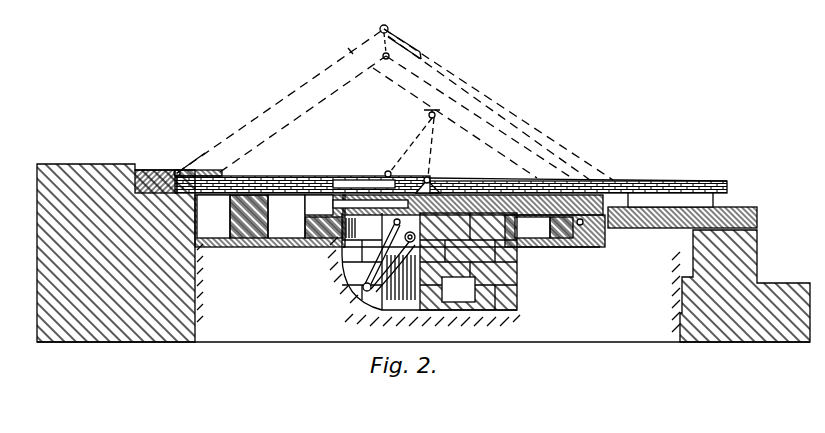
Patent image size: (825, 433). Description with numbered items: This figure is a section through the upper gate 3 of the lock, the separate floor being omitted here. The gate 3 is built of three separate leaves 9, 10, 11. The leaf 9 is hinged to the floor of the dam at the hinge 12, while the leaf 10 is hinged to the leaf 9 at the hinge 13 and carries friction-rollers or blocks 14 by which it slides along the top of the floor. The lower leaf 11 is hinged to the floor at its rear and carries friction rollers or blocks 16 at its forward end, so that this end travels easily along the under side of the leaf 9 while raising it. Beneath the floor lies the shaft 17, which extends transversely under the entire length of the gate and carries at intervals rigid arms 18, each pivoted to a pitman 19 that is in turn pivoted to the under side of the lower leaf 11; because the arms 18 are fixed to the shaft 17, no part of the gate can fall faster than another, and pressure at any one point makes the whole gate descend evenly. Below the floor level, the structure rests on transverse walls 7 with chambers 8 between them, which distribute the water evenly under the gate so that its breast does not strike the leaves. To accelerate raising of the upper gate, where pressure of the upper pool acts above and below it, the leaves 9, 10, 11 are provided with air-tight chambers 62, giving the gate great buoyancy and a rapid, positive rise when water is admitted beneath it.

The gate 3 is at (395, 102).
The transverse wall 7 is at (596, 210).
The chamber 8 is at (373, 216).
The leaf 9 is at (268, 178).
The leaf 10 is at (578, 179).
The leaf 11 is at (400, 221).
The hinge 12 is at (177, 170).
The hinge 13 is at (429, 176).
The friction-roller 14 is at (682, 210).
The friction roller 16 is at (330, 204).
The shaft 17 is at (416, 239).
The arm 18 is at (393, 267).
The pitman 19 is at (429, 261).
The air-tight chamber 62 is at (378, 184).